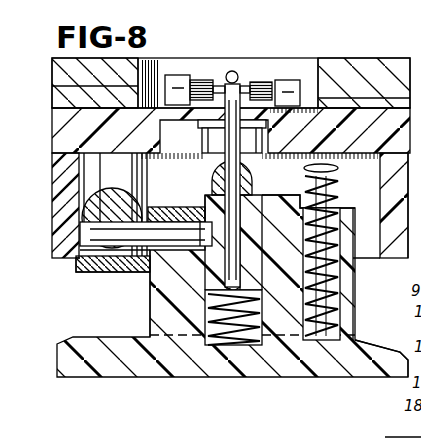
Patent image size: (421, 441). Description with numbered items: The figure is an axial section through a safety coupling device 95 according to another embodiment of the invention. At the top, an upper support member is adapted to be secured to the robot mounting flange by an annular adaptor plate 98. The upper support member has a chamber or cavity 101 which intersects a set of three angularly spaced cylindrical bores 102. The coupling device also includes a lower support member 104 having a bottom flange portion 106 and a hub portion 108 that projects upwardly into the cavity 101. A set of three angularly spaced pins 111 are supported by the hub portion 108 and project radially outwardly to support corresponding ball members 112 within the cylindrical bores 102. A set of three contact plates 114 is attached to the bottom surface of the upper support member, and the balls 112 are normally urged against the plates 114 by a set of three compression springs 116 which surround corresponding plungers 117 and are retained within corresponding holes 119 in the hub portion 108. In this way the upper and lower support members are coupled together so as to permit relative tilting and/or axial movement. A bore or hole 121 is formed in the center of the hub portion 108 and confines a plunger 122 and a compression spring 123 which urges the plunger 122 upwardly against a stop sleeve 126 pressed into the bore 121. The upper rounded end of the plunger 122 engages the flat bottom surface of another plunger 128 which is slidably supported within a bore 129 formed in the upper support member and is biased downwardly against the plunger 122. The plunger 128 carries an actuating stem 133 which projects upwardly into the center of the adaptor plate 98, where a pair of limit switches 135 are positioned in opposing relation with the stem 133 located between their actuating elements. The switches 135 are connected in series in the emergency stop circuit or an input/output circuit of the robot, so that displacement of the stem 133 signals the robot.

The safety coupling device 95 is at (46, 140).
The annular adaptor plate 98 is at (372, 70).
The chamber or cavity 101 is at (192, 207).
The cylindrical bores 102 is at (82, 172).
The lower support body or member 104 is at (88, 380).
The bottom flange portion 106 is at (396, 346).
The hub portion 108 is at (150, 313).
The pins 111 is at (160, 288).
The ball members 112 is at (78, 276).
The contact plates 114 is at (82, 284).
The compression springs 116 is at (338, 281).
The plungers 117 is at (336, 172).
The holes 119 is at (341, 297).
The bore or hole 121 is at (213, 348).
The plunger 122 is at (254, 190).
The compression spring 123 is at (250, 350).
The stop sleeve 126 is at (257, 218).
The plunger 128 is at (253, 168).
The bore 129 is at (206, 158).
The actuating stem 133 is at (233, 70).
The limit switches 135 is at (258, 86).